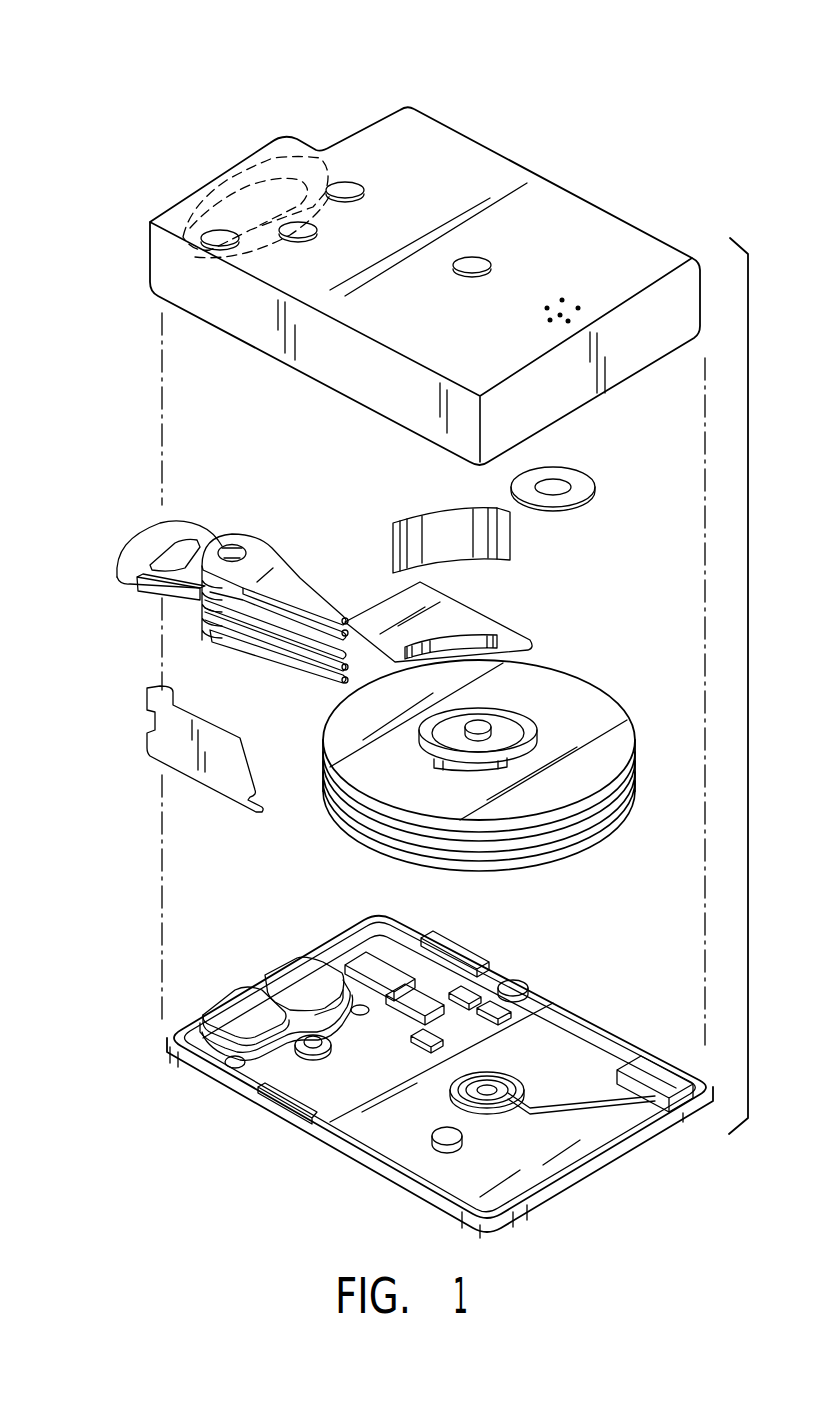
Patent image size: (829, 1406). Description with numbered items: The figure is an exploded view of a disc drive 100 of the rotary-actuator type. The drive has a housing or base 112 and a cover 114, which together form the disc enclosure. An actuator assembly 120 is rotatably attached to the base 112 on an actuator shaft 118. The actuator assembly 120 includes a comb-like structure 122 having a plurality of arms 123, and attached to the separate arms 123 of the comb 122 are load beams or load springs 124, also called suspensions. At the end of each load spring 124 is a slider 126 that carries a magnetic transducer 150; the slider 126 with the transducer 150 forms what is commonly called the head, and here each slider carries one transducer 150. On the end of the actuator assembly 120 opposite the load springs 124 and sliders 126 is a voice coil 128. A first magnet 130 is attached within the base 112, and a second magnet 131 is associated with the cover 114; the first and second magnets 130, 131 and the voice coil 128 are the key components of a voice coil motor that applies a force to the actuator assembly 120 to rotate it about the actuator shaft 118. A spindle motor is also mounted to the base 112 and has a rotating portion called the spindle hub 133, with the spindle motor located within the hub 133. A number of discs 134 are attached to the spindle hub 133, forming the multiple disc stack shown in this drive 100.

The disc drive 100 is at (554, 82).
The base 112 is at (605, 1045).
The cover 114 is at (587, 227).
The actuator shaft 118 is at (232, 548).
The actuator assembly 120 is at (183, 598).
The comb-like structure 122 is at (257, 652).
The arms 123 is at (285, 572).
The load beams or load springs 124 is at (300, 590).
The slider 126 is at (347, 618).
The voice coil 128 is at (140, 552).
The first magnet 130 is at (256, 165).
The second magnet 131 is at (230, 1008).
The spindle hub 133 is at (490, 720).
The discs 134 is at (602, 710).
The magnetic transducer 150 is at (350, 623).